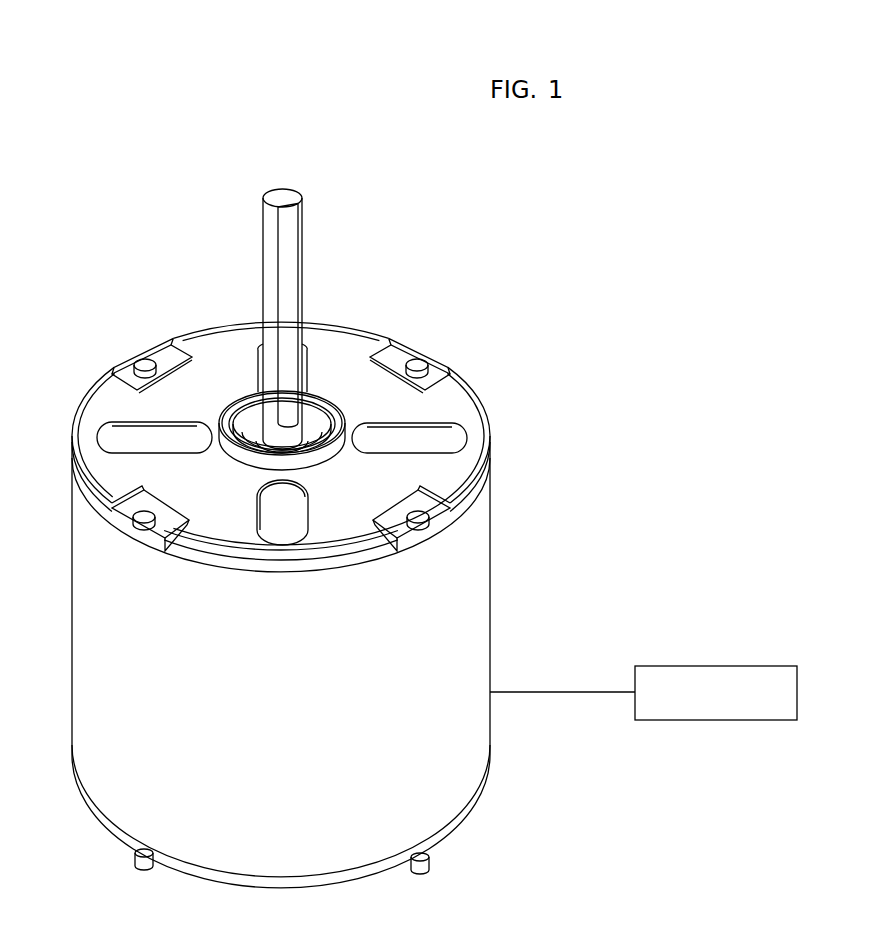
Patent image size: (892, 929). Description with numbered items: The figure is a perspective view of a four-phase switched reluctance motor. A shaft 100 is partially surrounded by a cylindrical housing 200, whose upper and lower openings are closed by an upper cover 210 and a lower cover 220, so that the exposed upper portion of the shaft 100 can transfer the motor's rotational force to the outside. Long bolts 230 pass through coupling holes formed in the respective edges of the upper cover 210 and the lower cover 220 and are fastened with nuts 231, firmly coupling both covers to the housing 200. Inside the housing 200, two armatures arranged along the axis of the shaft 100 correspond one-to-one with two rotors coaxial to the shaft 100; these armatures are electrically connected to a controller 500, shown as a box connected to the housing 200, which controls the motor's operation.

The shaft 100 is at (296, 255).
The housing 200 is at (480, 612).
The upper cover 210 is at (472, 430).
The lower cover 220 is at (470, 818).
The long bolts 230 is at (462, 540).
The nuts 231 is at (430, 866).
The controller 500 is at (718, 666).